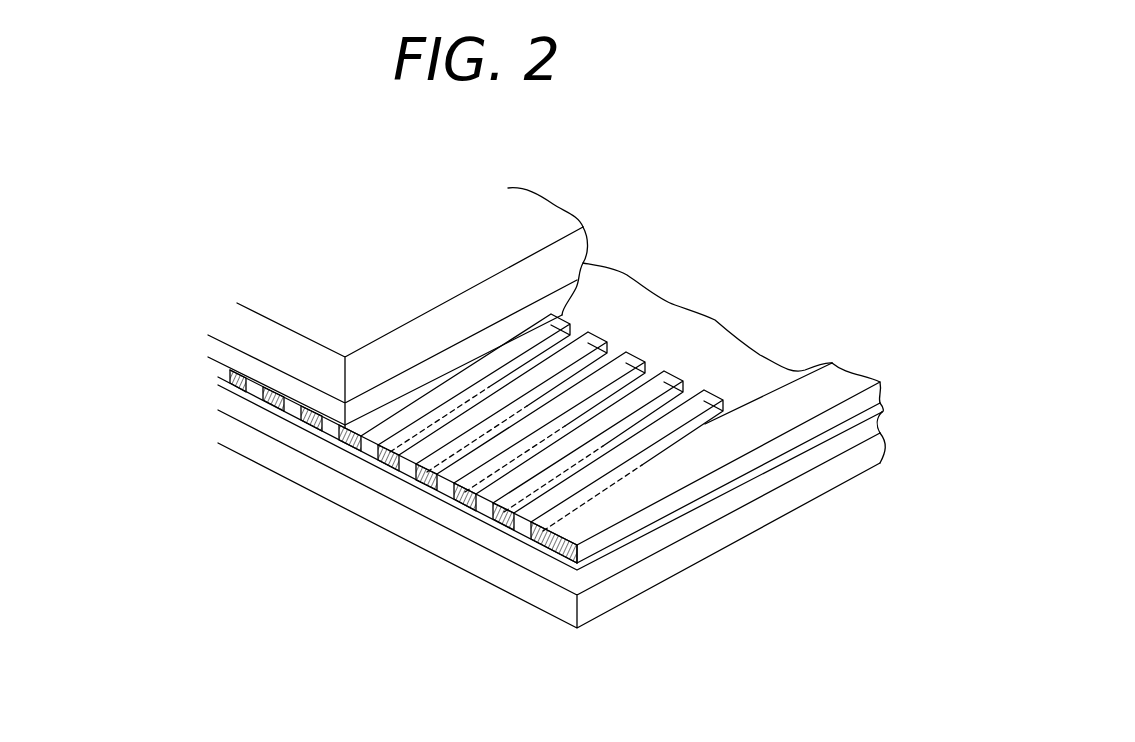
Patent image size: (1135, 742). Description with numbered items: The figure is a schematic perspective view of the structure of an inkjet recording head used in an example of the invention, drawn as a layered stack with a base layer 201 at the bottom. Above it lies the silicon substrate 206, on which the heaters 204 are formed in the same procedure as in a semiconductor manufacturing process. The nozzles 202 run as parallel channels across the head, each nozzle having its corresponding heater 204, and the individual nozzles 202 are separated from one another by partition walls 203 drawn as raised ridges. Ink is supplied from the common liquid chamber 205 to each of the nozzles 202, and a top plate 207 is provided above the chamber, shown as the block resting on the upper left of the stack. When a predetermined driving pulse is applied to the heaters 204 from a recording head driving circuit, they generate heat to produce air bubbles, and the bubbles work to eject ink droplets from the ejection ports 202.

The substrate 201 is at (676, 563).
The nozzle 202 is at (250, 400).
The partition wall 203 is at (665, 380).
The heater 204 is at (432, 493).
The common liquid chamber 205 is at (617, 303).
The silicon substrate 206 is at (297, 426).
The top plate 207 is at (538, 217).